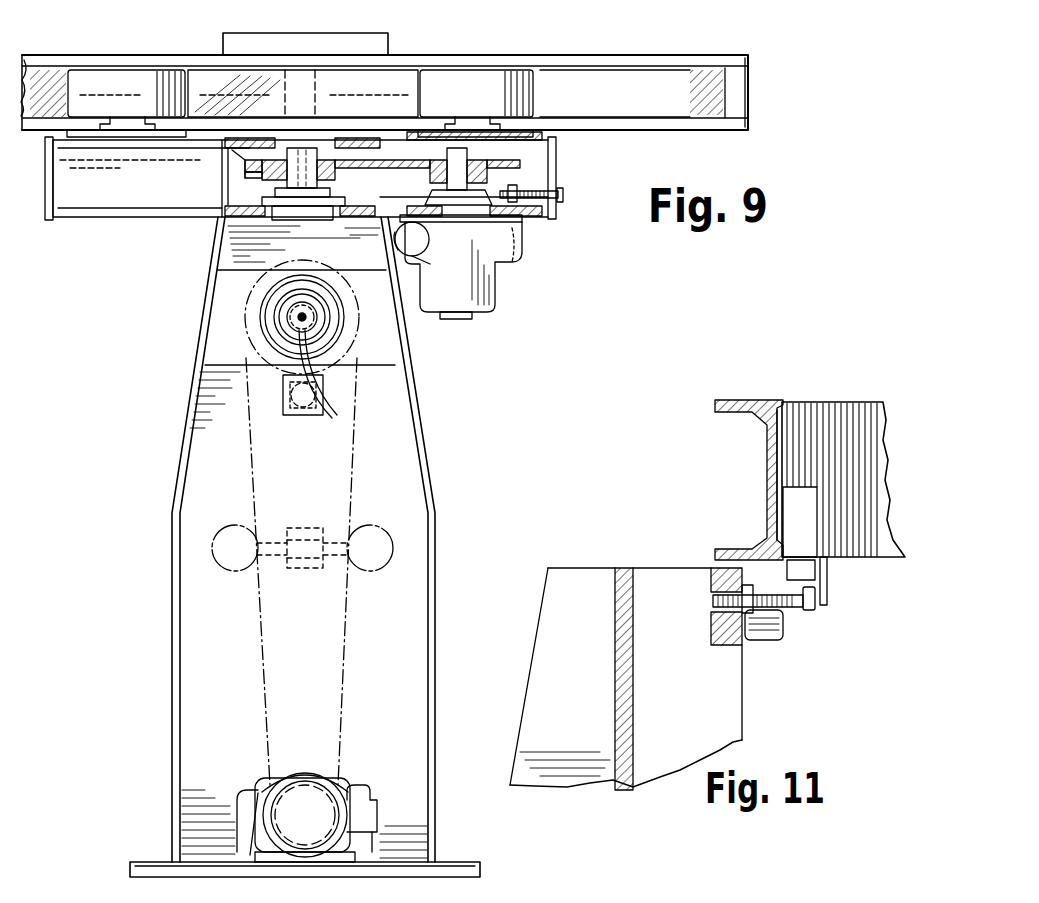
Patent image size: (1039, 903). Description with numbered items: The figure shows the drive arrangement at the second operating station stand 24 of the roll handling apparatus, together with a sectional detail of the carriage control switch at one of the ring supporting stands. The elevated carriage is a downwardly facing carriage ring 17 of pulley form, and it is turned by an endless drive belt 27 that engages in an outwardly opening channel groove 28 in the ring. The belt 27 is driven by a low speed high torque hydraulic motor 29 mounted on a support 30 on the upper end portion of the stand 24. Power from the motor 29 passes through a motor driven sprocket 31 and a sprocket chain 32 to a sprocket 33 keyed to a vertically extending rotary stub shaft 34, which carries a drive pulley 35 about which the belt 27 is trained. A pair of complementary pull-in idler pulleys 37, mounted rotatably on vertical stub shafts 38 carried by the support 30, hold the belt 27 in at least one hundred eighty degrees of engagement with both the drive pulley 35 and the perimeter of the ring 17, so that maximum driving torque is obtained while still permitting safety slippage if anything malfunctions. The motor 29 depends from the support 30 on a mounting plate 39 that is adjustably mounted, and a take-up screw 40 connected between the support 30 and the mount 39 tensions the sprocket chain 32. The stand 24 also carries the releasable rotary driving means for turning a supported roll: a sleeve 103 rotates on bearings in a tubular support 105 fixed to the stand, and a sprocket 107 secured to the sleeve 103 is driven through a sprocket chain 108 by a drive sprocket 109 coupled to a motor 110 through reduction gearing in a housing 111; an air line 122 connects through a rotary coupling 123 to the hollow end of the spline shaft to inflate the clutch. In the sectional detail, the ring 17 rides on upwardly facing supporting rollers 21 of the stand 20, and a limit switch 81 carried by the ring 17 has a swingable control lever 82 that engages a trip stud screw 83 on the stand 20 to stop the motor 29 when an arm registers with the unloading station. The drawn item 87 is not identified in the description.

In FIG. 9, the carriage ring 17 is at (720, 55).
In FIG. 11, the carriage ring 17 is at (813, 410).
In FIG. 11, the stand 20 is at (621, 775).
In FIG. 11, the supporting rollers 21 is at (763, 640).
In FIG. 9, the second operating station stand 24 is at (432, 470).
In FIG. 9, the endless drive belt 27 is at (598, 80).
In FIG. 11, the endless drive belt 27 is at (767, 490).
In FIG. 9, the channel groove 28 is at (722, 97).
In FIG. 11, the channel groove 28 is at (768, 420).
In FIG. 9, the hydraulic motor 29 is at (490, 263).
In FIG. 9, the support 30 is at (557, 168).
In FIG. 9, the motor driven sprocket 31 is at (518, 160).
In FIG. 9, the sprocket chain 32 is at (375, 225).
In FIG. 9, the sprocket 33 is at (285, 172).
In FIG. 9, the rotary stub shaft 34 is at (293, 152).
In FIG. 9, the drive pulley 35 is at (388, 50).
In FIG. 9, the pull-in idler pulleys 37 is at (486, 75).
In FIG. 9, the vertical stub shafts 38 is at (128, 120).
In FIG. 9, the mounting plate 39 is at (520, 212).
In FIG. 9, the screw 40 is at (563, 196).
In FIG. 11, the limit switch 81 is at (793, 524).
In FIG. 11, the swingable control lever 82 is at (829, 585).
In FIG. 11, the trip stud screw 83 is at (790, 602).
In FIG. 9, the guide roller 87 is at (125, 78).
In FIG. 9, the sleeve 103 is at (330, 325).
In FIG. 9, the tubular support 105 is at (262, 308).
In FIG. 9, the sprocket 107 is at (253, 348).
In FIG. 9, the sprocket chain 108 is at (345, 700).
In FIG. 9, the drive sprocket 109 is at (275, 795).
In FIG. 9, the motor 110 is at (325, 818).
In FIG. 9, the housing 111 is at (302, 770).
In FIG. 9, the line 122 is at (333, 412).
In FIG. 9, the rotary coupling 123 is at (298, 318).